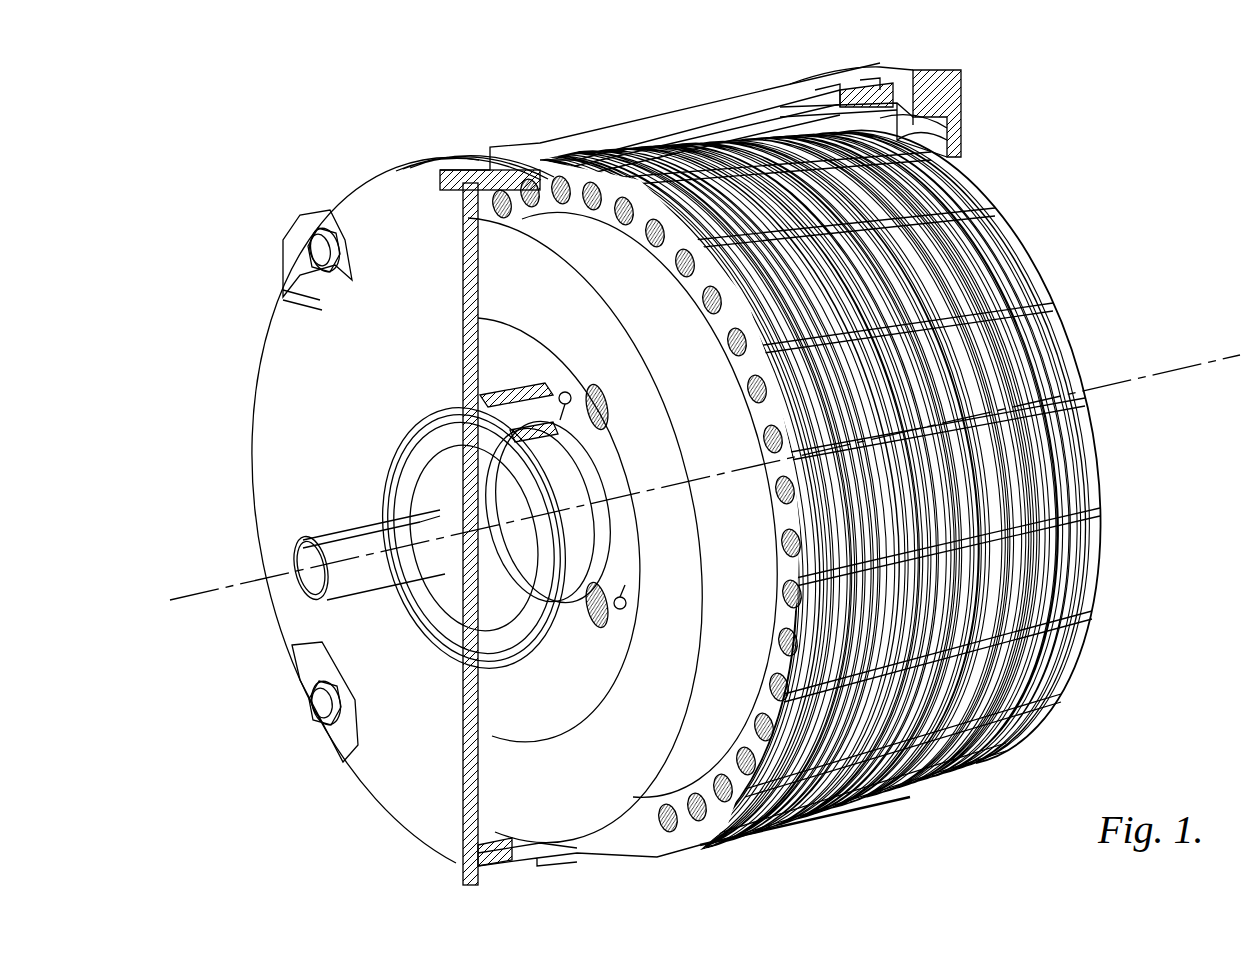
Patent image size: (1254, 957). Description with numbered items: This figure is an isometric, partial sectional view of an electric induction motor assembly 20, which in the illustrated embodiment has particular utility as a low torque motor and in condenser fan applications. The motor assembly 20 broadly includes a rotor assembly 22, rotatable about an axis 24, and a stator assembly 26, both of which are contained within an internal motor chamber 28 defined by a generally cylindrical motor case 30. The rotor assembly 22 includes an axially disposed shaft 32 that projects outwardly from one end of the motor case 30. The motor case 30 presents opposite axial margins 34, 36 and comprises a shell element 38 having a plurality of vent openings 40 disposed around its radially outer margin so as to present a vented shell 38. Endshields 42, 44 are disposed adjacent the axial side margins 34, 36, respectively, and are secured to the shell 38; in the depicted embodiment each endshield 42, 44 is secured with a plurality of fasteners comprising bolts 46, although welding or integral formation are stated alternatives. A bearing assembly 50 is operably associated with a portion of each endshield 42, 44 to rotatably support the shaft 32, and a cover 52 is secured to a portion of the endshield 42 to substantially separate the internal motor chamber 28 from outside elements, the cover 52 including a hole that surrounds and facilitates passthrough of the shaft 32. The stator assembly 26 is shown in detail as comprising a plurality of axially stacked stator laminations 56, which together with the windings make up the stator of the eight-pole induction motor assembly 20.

The electric induction motor assembly 20 is at (1092, 243).
The rotor assembly 22 is at (598, 652).
The axis 24 is at (213, 597).
The stator assembly 26 is at (1042, 652).
The internal motor chamber 28 is at (892, 122).
The motor case 30 is at (588, 122).
The shaft 32 is at (388, 572).
The axial margin 34 is at (398, 160).
The axial margin 36 is at (977, 63).
The shell element 38 is at (700, 112).
The vent openings 40 is at (803, 73).
The endshield 42 is at (290, 345).
The endshield 44 is at (955, 98).
The bolts 46 is at (318, 712).
The bearing assembly 50 is at (575, 453).
The cover 52 is at (460, 620).
The stator laminations 56 is at (683, 838).